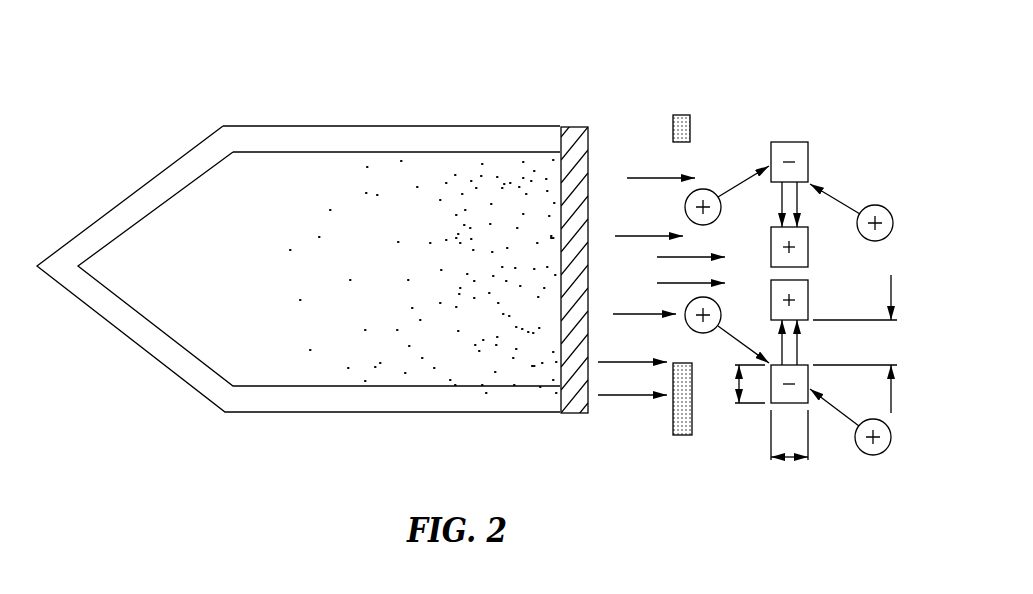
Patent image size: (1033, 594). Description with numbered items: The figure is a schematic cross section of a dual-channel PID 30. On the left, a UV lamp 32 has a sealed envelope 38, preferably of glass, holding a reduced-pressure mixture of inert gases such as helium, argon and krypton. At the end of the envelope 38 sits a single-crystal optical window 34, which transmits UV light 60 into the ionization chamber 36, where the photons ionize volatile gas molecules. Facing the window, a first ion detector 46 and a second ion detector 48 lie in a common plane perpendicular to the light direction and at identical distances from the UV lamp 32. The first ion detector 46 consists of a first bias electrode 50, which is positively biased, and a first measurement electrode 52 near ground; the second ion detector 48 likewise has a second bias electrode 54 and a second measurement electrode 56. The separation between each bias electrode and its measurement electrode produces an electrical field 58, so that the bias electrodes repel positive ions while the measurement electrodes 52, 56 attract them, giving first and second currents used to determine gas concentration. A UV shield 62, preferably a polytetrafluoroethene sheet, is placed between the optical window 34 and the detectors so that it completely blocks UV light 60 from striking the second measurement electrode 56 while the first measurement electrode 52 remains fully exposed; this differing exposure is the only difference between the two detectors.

The dual-channel PID 30 is at (629, 69).
The UV lamp 32 is at (237, 349).
The optical window 34 is at (578, 413).
The ionization chamber 36 is at (747, 445).
The sealed envelope 38 is at (333, 413).
The first ion detector 46 is at (823, 111).
The second ion detector 48 is at (829, 445).
The first bias electrode 50 is at (809, 257).
The first measurement electrode 52 is at (809, 157).
The second bias electrode 54 is at (809, 290).
The second measurement electrode 56 is at (809, 378).
The electrical field 58 is at (797, 198).
The UV light 60 is at (623, 396).
The UV shield 62 is at (684, 115).